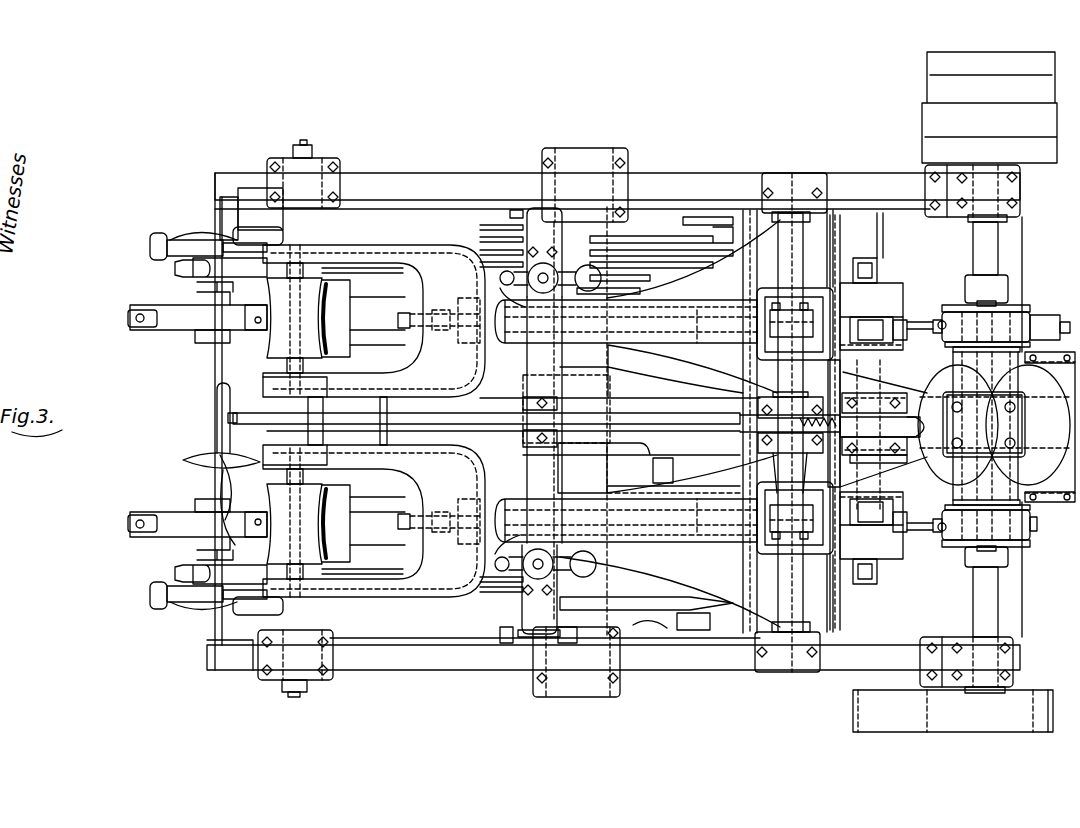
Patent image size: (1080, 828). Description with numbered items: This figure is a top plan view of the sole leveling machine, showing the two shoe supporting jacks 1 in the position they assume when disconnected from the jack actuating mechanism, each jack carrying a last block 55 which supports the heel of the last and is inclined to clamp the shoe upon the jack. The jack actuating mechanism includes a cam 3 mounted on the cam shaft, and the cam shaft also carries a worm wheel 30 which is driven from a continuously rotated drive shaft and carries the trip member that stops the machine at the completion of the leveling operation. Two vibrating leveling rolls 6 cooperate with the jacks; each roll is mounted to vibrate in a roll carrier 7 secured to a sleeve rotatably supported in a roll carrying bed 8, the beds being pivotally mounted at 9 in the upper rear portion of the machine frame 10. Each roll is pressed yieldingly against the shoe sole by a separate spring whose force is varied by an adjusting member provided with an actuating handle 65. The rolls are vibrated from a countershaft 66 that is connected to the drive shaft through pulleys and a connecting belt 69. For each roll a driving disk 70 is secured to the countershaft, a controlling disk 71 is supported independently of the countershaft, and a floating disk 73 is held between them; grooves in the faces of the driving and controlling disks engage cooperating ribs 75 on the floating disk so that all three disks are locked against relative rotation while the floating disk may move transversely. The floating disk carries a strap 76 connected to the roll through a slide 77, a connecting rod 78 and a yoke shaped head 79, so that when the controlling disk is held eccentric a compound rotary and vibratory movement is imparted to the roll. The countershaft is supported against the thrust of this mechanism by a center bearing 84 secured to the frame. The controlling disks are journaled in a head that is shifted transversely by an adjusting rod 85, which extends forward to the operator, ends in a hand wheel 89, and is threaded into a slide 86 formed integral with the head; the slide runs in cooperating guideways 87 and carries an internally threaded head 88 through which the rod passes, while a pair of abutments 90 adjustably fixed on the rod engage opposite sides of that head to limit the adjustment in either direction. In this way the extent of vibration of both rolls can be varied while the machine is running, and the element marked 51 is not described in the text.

The jack 1 is at (188, 327).
The cam 3 is at (470, 435).
The leveling roll 6 is at (283, 340).
The roll carrier 7 is at (367, 247).
The roll carrying bed 8 is at (721, 343).
The pivot 9 is at (790, 186).
The machine frame 10 is at (668, 178).
The worm wheel 30 is at (703, 320).
The rod 51 is at (152, 331).
The last block 55 is at (140, 312).
The actuating handle 65 is at (567, 278).
The countershaft 66 is at (986, 612).
The connecting belt 69 is at (908, 722).
The driving disk 70 is at (1015, 306).
The controlling disk 71 is at (950, 348).
The floating disk 73 is at (1033, 527).
The ribs 75 is at (985, 310).
The strap 76 is at (915, 320).
The slide 77 is at (868, 317).
The connecting rod 78 is at (450, 300).
The yoke shaped head 79 is at (360, 372).
The center bearing 84 is at (998, 433).
The adjusting rod 85 is at (432, 410).
The slide 86 is at (912, 444).
The guideways 87 is at (887, 447).
The internally threaded head 88 is at (843, 433).
The hand wheel 89 is at (217, 400).
The abutments 90 is at (833, 423).